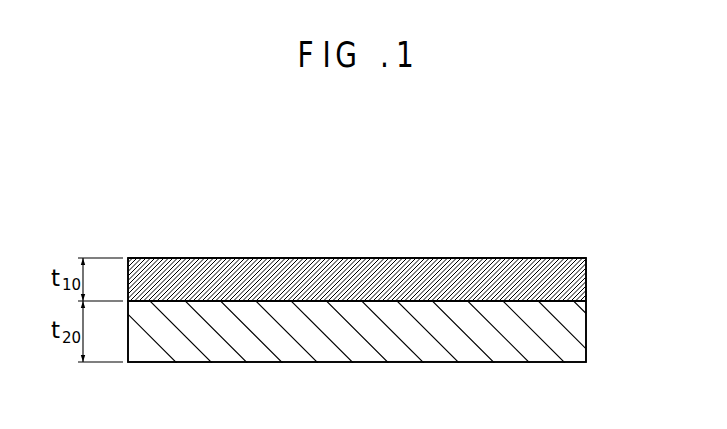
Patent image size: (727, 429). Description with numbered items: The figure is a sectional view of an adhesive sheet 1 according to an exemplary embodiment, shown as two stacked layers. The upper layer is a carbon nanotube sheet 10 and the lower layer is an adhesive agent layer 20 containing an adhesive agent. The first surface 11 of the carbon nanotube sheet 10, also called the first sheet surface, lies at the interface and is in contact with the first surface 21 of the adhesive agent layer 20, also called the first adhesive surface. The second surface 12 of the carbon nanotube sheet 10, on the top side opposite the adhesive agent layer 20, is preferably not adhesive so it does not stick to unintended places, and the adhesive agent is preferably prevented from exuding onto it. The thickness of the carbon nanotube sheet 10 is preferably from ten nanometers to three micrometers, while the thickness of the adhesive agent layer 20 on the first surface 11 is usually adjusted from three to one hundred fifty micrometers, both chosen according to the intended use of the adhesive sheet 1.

The adhesive sheet 1 is at (485, 215).
The carbon nanotube sheet 10 is at (587, 270).
The first surface 11 is at (556, 301).
The second surface 12 is at (550, 258).
The adhesive agent layer 20 is at (572, 343).
The first surface 21 is at (577, 285).